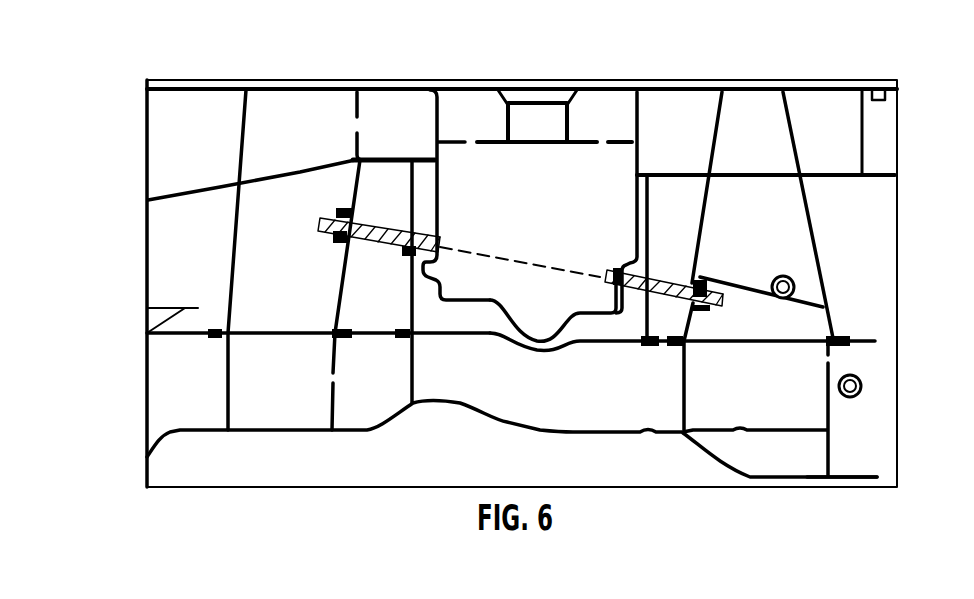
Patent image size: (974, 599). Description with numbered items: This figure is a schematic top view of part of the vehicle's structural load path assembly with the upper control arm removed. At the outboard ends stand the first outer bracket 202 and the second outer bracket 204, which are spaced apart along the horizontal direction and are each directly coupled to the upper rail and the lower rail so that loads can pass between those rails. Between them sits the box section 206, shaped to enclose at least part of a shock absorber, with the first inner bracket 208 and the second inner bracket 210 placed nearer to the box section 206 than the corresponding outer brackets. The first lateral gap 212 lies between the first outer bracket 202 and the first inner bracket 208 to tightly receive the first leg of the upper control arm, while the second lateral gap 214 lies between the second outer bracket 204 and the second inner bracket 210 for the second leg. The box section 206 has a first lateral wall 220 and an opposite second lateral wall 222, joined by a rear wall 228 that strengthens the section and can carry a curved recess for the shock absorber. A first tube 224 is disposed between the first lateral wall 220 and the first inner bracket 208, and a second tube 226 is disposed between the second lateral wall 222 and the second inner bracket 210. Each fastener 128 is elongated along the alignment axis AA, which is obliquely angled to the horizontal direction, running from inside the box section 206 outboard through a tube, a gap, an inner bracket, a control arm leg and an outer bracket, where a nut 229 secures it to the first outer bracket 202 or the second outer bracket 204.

The fastener 128 is at (345, 255).
The first outer bracket 202 is at (297, 81).
The second outer bracket 204 is at (708, 213).
The box section 206 is at (436, 322).
The first inner bracket 208 is at (445, 139).
The second inner bracket 210 is at (647, 200).
The first lateral gap 212 is at (373, 330).
The second lateral gap 214 is at (697, 180).
The first lateral wall 220 is at (442, 187).
The second lateral wall 222 is at (708, 242).
The first tube 224 is at (404, 255).
The second tube 226 is at (621, 296).
The rear wall 228 is at (540, 267).
The nut 229 is at (268, 81).
The alignment axis AA is at (555, 268).